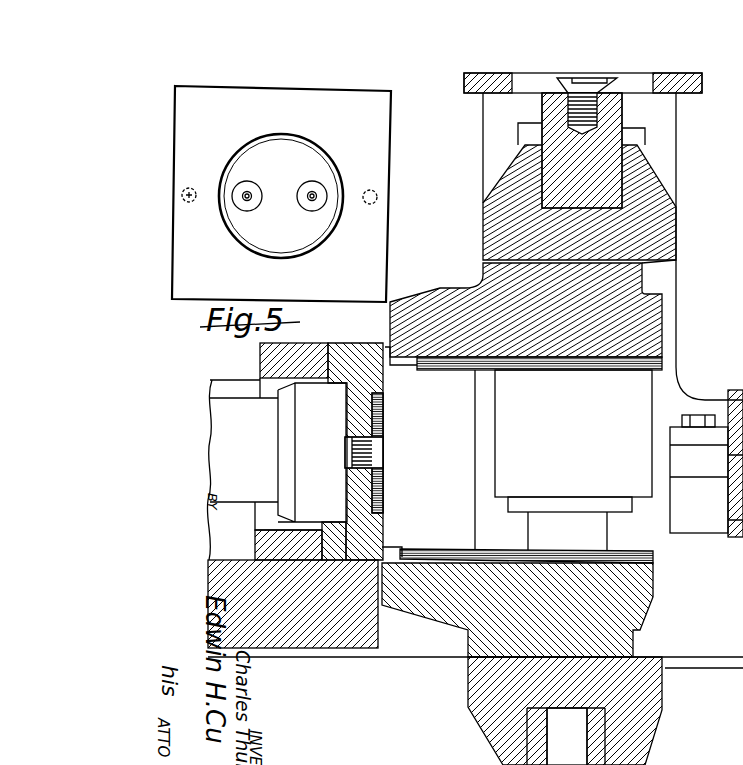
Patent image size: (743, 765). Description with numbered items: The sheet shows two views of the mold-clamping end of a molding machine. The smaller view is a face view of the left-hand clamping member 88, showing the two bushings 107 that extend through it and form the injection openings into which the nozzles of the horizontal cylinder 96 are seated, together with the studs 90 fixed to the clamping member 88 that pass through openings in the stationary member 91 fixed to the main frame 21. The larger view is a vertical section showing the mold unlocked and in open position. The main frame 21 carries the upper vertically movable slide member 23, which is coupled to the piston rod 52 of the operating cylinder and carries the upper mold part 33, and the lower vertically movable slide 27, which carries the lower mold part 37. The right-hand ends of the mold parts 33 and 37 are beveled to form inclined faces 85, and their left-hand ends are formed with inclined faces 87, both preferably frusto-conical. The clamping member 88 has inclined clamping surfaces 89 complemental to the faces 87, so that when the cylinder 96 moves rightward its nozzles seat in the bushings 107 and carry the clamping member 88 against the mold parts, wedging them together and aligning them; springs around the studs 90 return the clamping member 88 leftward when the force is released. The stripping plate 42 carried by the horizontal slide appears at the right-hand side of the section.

In FIG. 7, the main frame 21 is at (336, 644).
In FIG. 7, the upper vertically movable slide member 23 is at (668, 217).
In FIG. 7, the lower vertically movable slide 27 is at (655, 764).
In FIG. 7, the upper mold part 33 is at (658, 316).
In FIG. 7, the lower mold part 37 is at (517, 614).
In FIG. 7, the stripping plate 42 is at (722, 495).
In FIG. 7, the piston rod 52 is at (604, 82).
In FIG. 7, the inclined faces 85 is at (652, 292).
In FIG. 7, the inclined faces 87 is at (425, 287).
In FIG. 5, the clamping member 88 is at (388, 155).
In FIG. 7, the clamping member 88 is at (373, 350).
In FIG. 5, the inclined clamping surfaces 89 is at (332, 233).
In FIG. 7, the inclined clamping surfaces 89 is at (383, 400).
In FIG. 5, the studs 90 is at (189, 204).
In FIG. 7, the stationary member 91 is at (262, 354).
In FIG. 7, the horizontal cylinder 96 is at (277, 469).
In FIG. 5, the bushings 107 is at (308, 190).
In FIG. 7, the bushings 107 is at (368, 450).